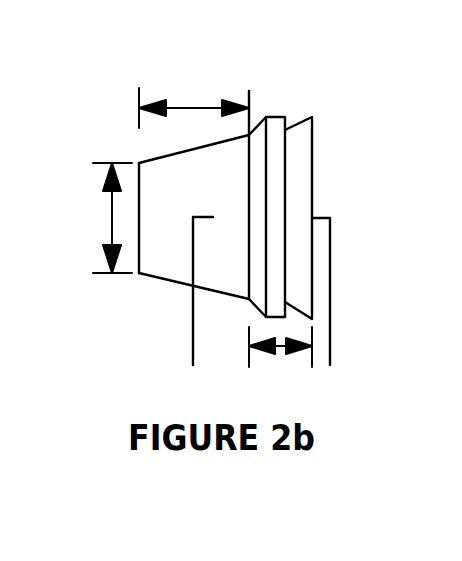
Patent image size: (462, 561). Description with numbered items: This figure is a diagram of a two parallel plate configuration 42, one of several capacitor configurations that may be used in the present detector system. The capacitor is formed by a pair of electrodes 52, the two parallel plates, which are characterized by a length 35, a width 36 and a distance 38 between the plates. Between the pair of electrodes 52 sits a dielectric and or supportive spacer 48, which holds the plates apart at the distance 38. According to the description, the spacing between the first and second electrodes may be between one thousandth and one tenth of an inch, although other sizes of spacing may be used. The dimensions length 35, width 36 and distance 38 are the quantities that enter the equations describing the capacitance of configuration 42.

The length 35 is at (175, 108).
The width 36 is at (110, 227).
The distance between the plates 38 is at (280, 348).
The two parallel plate configuration 42 is at (270, 202).
The dielectric and or supportive spacer 48 is at (275, 117).
The electrodes 52 is at (158, 281).